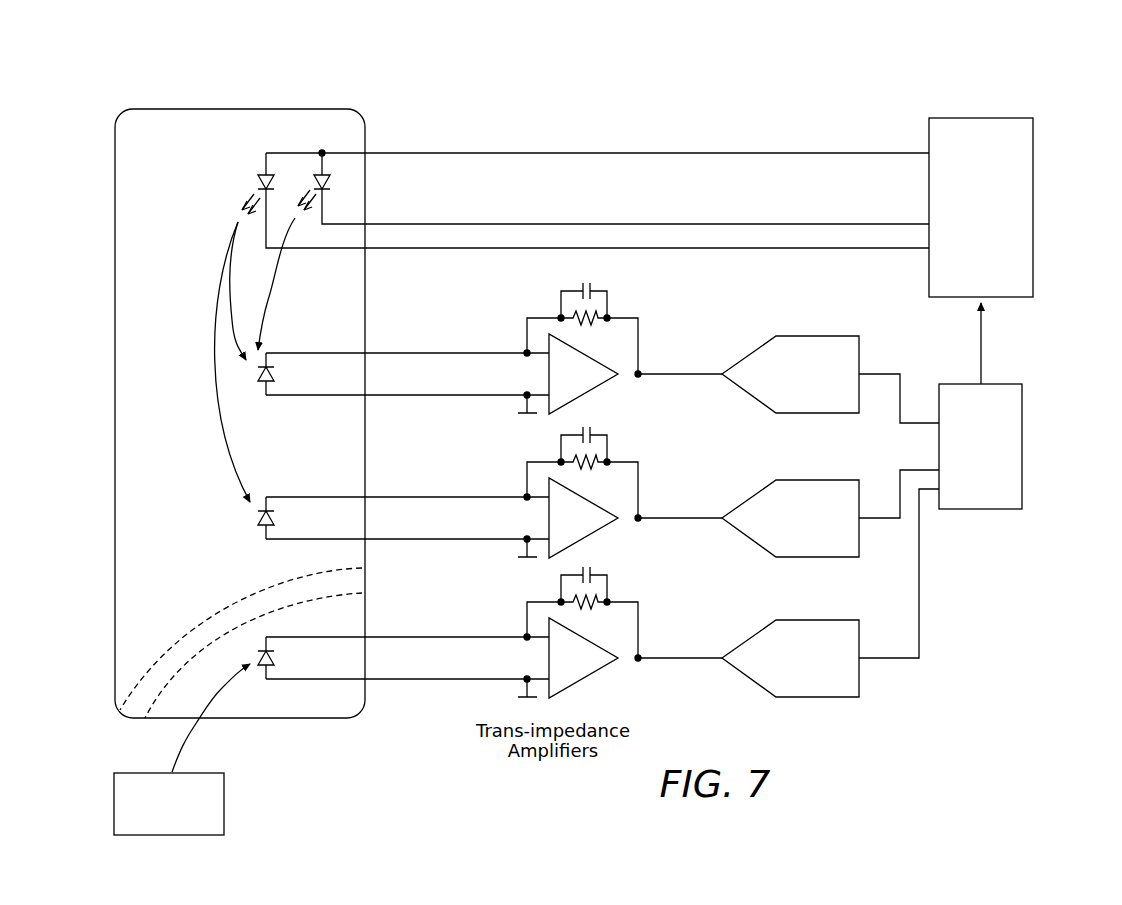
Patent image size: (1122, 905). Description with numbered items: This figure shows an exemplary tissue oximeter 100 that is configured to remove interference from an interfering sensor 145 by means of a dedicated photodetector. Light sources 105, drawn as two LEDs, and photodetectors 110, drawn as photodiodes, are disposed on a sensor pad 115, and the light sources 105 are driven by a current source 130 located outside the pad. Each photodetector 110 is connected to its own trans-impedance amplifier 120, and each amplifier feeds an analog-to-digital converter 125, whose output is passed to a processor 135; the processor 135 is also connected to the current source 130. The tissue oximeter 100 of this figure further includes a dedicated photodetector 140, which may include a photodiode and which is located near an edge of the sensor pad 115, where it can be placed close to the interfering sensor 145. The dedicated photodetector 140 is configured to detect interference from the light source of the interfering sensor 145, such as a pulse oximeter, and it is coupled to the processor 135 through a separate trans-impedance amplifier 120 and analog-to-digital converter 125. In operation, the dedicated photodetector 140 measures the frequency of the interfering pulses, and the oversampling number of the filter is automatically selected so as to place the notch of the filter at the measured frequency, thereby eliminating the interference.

The tissue oximeter 100 is at (818, 88).
The light sources 105 is at (342, 165).
The photodetectors 110 is at (275, 372).
The sensor pad 115 is at (366, 462).
The trans-impedance amplifier 120 is at (650, 324).
The analog-to-digital converter 125 is at (811, 335).
The current source 130 is at (966, 212).
The processor 135 is at (1023, 414).
The dedicated photodetector 140 is at (277, 652).
The interfering sensor 145 is at (225, 800).